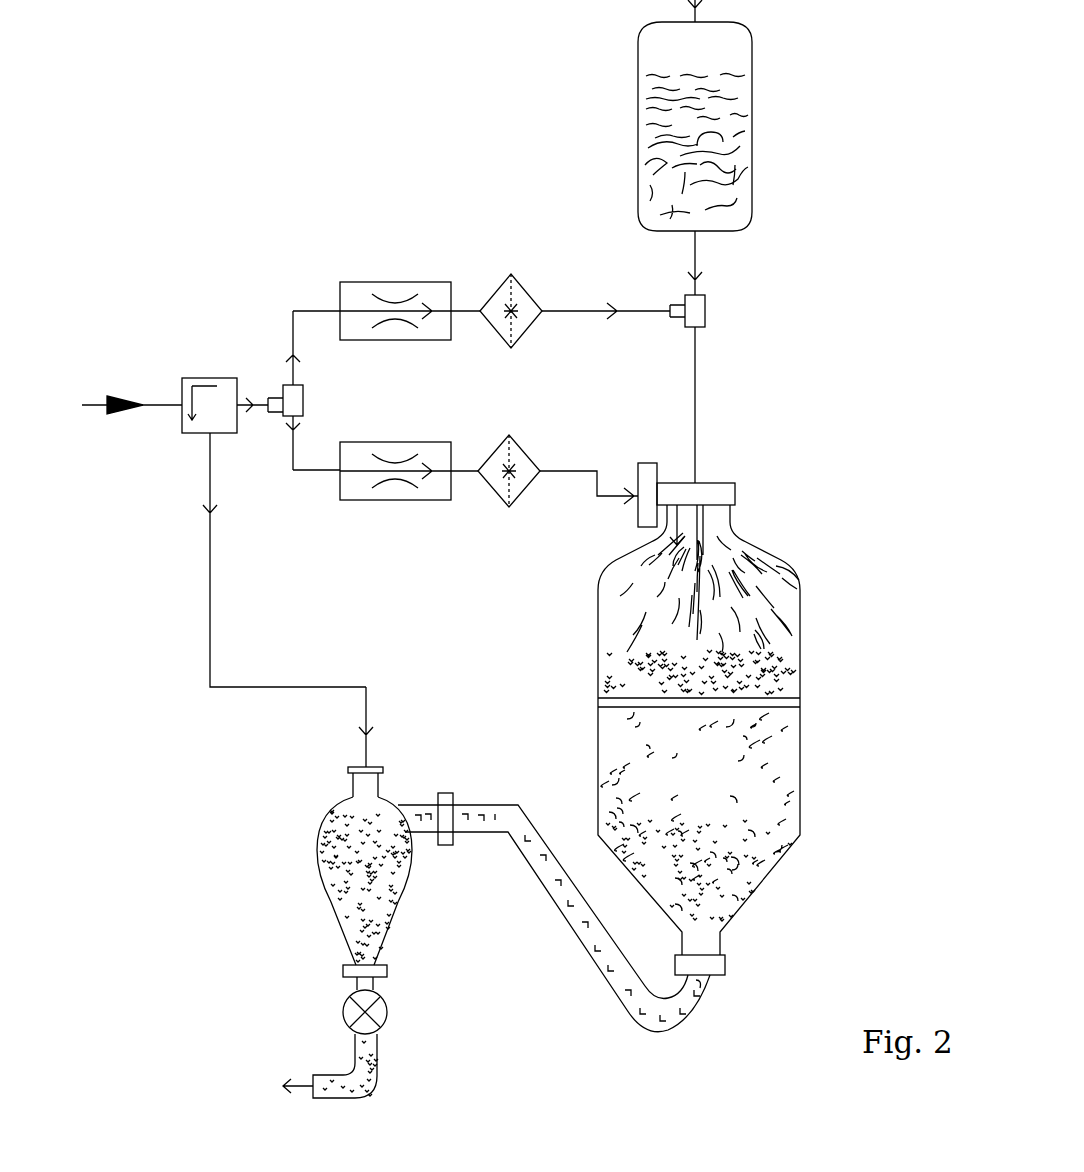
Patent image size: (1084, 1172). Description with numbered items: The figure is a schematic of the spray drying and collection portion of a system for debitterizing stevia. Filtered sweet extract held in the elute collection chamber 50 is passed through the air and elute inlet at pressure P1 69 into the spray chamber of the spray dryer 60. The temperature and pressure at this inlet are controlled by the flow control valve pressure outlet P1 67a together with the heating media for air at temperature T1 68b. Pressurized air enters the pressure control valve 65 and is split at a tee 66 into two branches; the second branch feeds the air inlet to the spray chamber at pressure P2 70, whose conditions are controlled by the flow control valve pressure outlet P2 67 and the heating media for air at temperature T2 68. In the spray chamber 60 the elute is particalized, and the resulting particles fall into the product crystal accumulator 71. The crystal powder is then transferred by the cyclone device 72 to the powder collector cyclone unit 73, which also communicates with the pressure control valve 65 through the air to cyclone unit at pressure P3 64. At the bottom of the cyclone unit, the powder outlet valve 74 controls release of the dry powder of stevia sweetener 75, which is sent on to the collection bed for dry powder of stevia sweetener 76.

The elute collection chamber 50 is at (640, 148).
The spray chamber of spray dryer 60 is at (797, 672).
The air to cyclone unit at pressure P3 64 is at (208, 578).
The pressure control valve 65 is at (197, 378).
The tee connector 66 is at (305, 400).
The flow control valve pressure outlet P2 67 is at (398, 500).
The flow control valve pressure outlet P1 67a is at (398, 282).
The heating media for air at temp. T2 68 is at (500, 496).
The heating media for air at temp. T1 68b is at (500, 292).
The air and elute inlet at pressure P1 69 is at (708, 314).
The air inlet to spray chamber at pressure P2 70 is at (672, 490).
The product crystal accumulator 71 is at (800, 797).
The cyclone device 72 is at (592, 962).
The powder collector cyclone unit 73 is at (322, 885).
The powder outlet valve 74 is at (345, 1010).
The dry powder of stevia sweetener 75 is at (335, 1082).
The collection bed for dry powder of stevia sweetener 76 is at (269, 1091).